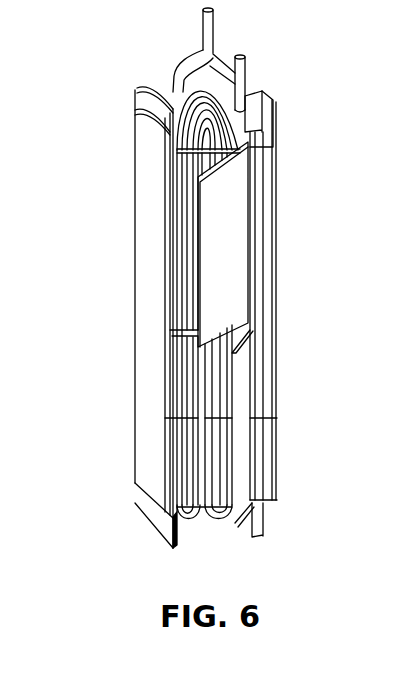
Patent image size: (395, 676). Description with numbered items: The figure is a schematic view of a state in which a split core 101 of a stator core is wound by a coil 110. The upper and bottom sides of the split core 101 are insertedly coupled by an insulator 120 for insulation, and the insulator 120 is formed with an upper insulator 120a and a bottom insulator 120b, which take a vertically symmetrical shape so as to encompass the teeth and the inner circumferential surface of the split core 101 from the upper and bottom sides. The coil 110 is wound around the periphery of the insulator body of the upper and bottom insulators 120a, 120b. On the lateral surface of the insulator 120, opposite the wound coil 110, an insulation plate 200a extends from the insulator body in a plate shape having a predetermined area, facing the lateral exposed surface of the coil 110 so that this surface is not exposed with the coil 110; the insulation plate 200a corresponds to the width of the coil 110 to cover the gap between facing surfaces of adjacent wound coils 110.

The split core 101 is at (267, 247).
The coil 110 is at (237, 122).
The insulator 120 is at (97, 317).
The upper insulator 120a is at (163, 289).
The bottom insulator 120b is at (167, 350).
The insulation plate 200a is at (240, 362).